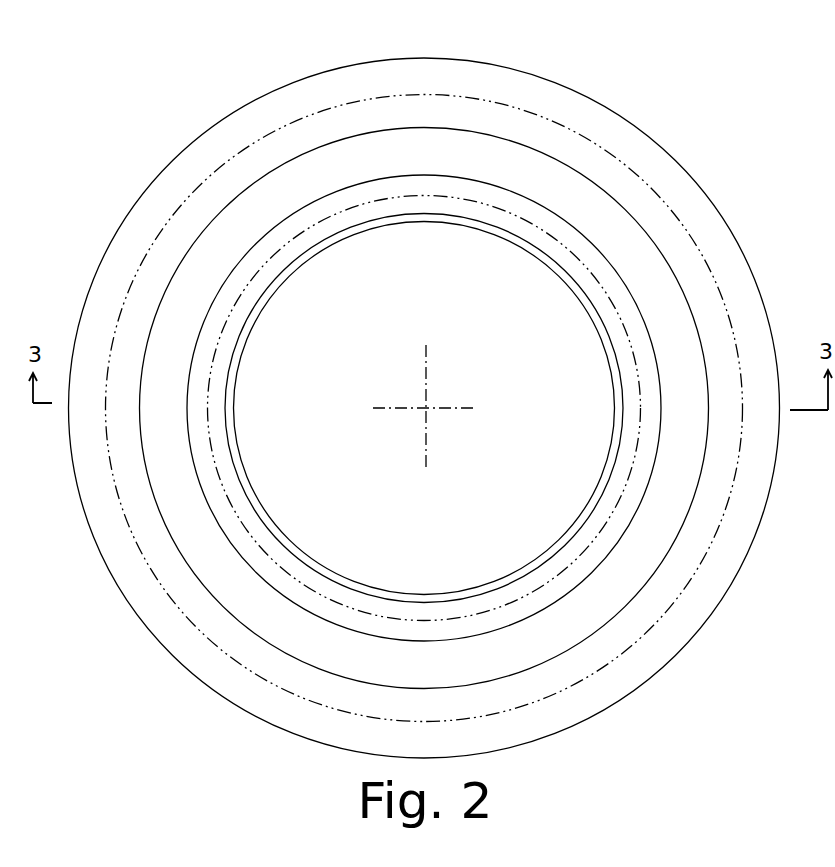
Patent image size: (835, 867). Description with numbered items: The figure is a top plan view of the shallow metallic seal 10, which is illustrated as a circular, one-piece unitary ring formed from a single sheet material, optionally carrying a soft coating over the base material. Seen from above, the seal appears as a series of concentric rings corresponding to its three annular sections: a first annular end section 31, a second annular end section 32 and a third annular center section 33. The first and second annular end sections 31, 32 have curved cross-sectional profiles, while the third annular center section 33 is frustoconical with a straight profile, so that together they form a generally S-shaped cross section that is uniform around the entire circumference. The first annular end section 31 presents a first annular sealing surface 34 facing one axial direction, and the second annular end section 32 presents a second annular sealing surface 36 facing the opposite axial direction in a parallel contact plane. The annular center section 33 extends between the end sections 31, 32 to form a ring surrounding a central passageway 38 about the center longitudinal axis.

The shallow metallic seal 10 is at (143, 90).
The first annular end section 31 is at (262, 117).
The second annular end section 32 is at (363, 195).
The third annular center section 33 is at (402, 148).
The first annular sealing surface 34 is at (493, 100).
The second annular sealing surface 36 is at (543, 227).
The central passageway 38 is at (560, 323).